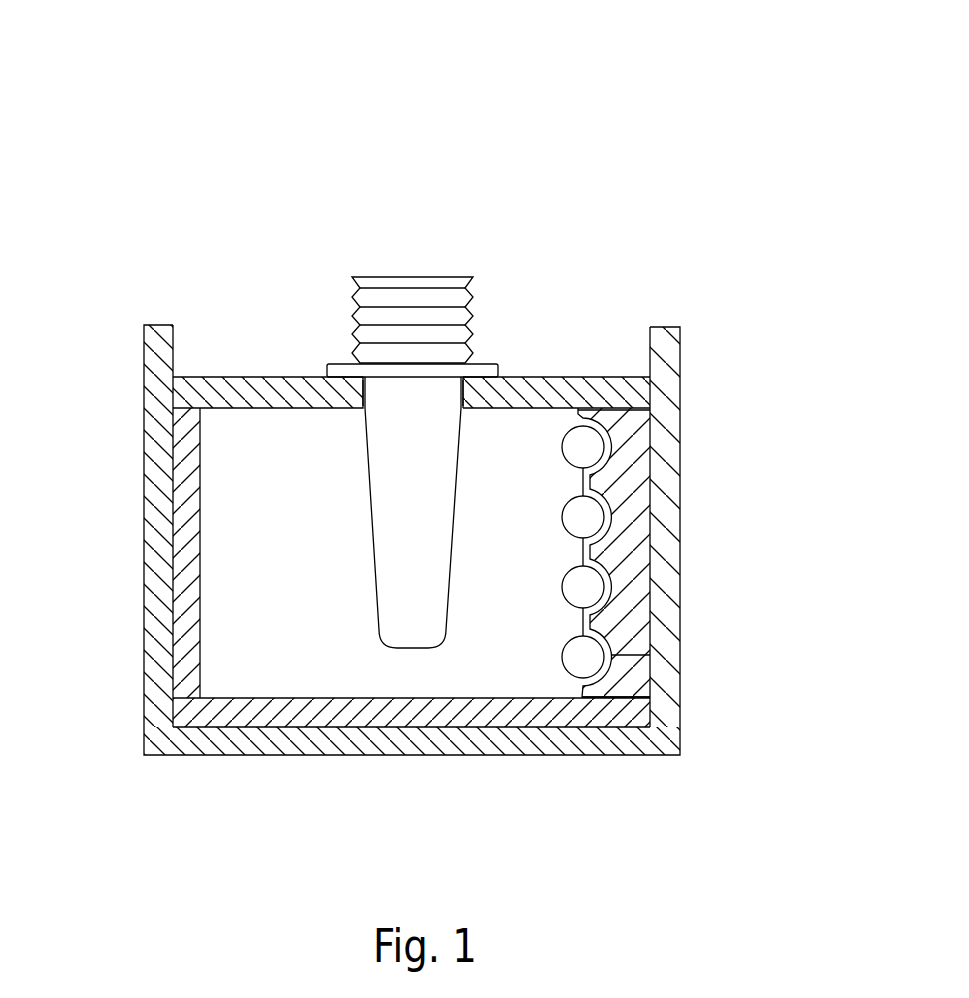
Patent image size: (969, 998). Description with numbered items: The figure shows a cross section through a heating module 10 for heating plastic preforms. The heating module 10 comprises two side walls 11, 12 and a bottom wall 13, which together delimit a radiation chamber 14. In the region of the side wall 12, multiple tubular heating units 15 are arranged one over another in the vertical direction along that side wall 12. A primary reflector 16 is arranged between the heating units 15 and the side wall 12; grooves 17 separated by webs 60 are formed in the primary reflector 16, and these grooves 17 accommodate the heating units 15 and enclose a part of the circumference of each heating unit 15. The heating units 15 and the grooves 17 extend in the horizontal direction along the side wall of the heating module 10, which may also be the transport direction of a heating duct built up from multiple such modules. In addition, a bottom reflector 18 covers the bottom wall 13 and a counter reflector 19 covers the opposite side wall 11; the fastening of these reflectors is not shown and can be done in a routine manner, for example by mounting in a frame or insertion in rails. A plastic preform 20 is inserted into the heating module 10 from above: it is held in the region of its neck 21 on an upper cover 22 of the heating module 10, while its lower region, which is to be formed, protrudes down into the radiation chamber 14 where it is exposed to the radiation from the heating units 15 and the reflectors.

The heating module 10 is at (497, 163).
The side wall 11 is at (143, 401).
The side wall 12 is at (680, 420).
The bottom wall 13 is at (303, 755).
The radiation chamber 14 is at (245, 432).
The tubular heating unit 15 is at (567, 378).
The primary reflector 16 is at (638, 598).
The groove 17 is at (612, 511).
The bottom reflector 18 is at (386, 735).
The counter reflector 19 is at (183, 656).
The plastic preform 20 is at (446, 627).
The neck 21 is at (474, 357).
The upper cover 22 is at (288, 410).
The web 60 is at (556, 575).